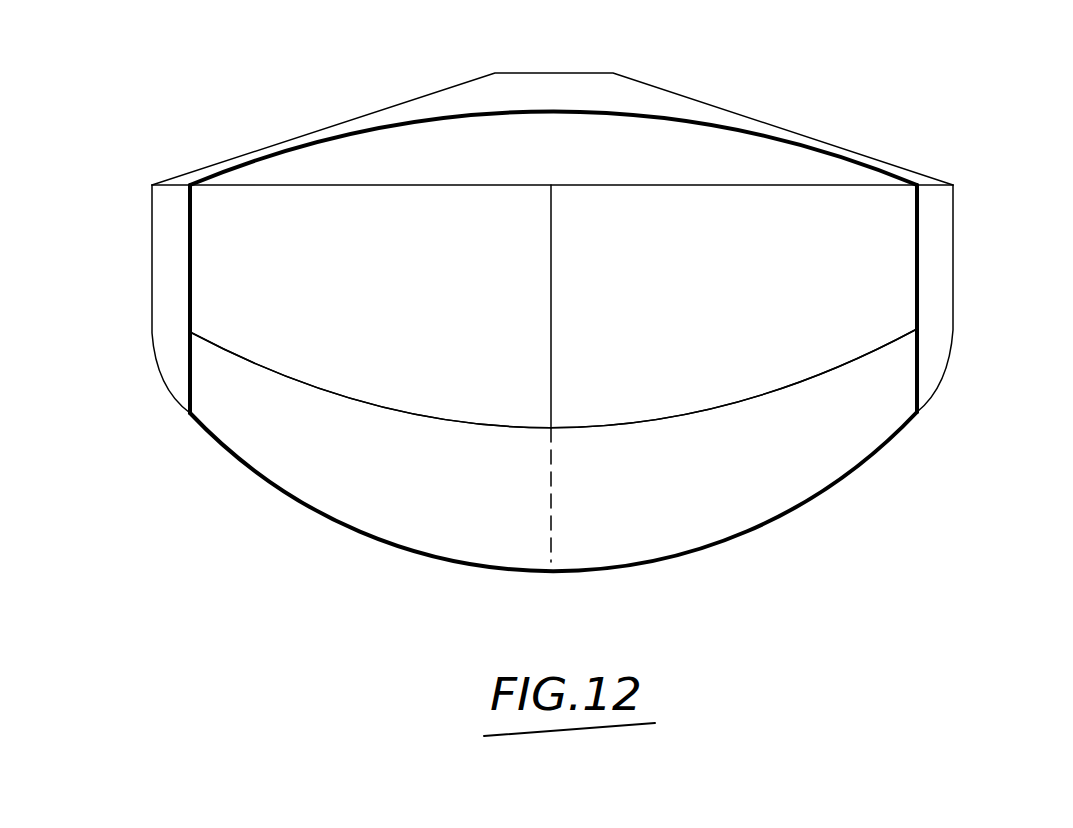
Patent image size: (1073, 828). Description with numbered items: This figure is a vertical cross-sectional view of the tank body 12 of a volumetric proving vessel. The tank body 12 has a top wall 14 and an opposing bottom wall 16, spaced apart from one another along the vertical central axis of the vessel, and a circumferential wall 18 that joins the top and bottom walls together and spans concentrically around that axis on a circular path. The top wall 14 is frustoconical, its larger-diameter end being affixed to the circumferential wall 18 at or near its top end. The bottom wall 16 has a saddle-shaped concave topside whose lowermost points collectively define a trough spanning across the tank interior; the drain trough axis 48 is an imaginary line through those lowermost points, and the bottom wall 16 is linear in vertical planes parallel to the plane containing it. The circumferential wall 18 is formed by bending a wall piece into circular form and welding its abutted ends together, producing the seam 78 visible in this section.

The tank body 12 is at (979, 245).
The top wall 14 is at (668, 104).
The bottom wall 16 is at (325, 415).
The circumferential wall 18 is at (853, 205).
The drain trough axis 48 is at (553, 507).
The seam 78 is at (551, 268).